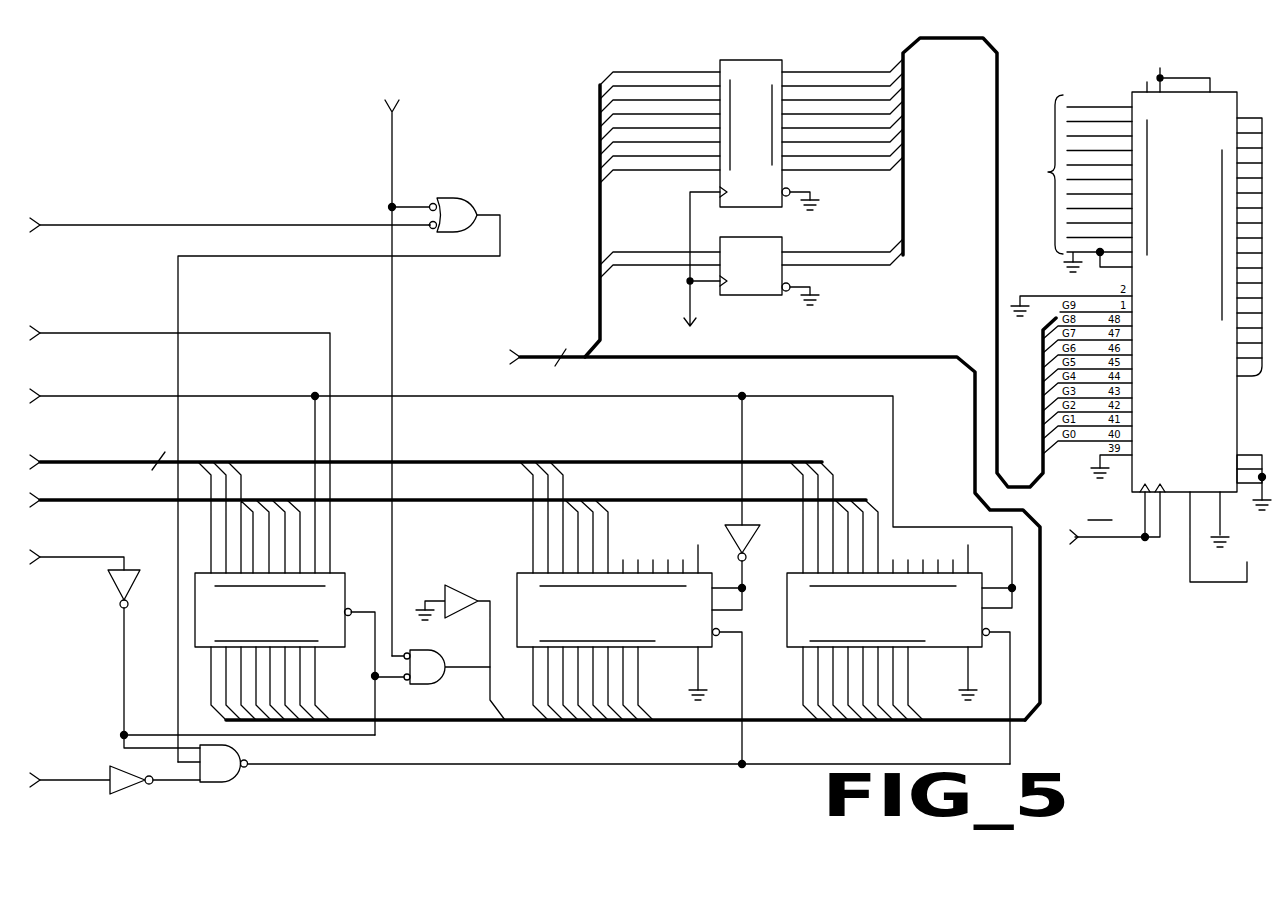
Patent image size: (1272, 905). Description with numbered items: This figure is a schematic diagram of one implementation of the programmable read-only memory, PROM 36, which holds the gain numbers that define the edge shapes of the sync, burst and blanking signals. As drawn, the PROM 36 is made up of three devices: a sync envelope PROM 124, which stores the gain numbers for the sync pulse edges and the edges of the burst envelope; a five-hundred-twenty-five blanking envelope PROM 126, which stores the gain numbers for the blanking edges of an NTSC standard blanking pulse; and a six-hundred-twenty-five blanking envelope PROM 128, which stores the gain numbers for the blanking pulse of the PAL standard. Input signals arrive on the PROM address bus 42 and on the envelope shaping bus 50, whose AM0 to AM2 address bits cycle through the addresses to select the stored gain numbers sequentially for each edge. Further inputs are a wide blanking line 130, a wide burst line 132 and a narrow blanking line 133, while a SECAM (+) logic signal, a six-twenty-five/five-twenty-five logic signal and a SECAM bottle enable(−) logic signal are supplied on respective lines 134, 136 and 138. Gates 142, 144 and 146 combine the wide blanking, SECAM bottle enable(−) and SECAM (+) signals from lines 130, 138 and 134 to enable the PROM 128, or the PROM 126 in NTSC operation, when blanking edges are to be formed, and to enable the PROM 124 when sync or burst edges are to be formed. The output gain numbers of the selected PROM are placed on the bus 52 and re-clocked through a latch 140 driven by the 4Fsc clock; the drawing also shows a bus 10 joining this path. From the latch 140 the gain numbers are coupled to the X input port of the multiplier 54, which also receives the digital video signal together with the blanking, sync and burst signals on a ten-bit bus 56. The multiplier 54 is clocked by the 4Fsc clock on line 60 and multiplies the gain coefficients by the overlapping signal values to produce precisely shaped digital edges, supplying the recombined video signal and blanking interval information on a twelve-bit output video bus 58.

The bus 10 is at (775, 528).
The programmable read-only-memory (PROM) 36 is at (578, 752).
The PROM address bus 42 is at (65, 502).
The envelope shaping bus 50 is at (150, 462).
The bus 52 is at (915, 357).
The multiplier 54 is at (1135, 90).
The 10-bit bus 56 is at (1067, 183).
The 12-bit output video bus 58 is at (1256, 86).
The line 60 is at (1100, 540).
The sync envelope PROM 124 is at (340, 572).
The 525 blanking envelope PROM 126 is at (517, 582).
The 625 blanking envelope PROM 128 is at (787, 636).
The wide blanking line 130 is at (65, 227).
The wide burst line 132 is at (65, 335).
The narrow blanking line 133 is at (62, 566).
The line 134 is at (65, 782).
The line 136 is at (65, 398).
The line 138 is at (392, 127).
The latch 140 is at (762, 62).
The gate 142 is at (470, 197).
The gate 144 is at (108, 592).
The gate 146 is at (252, 760).